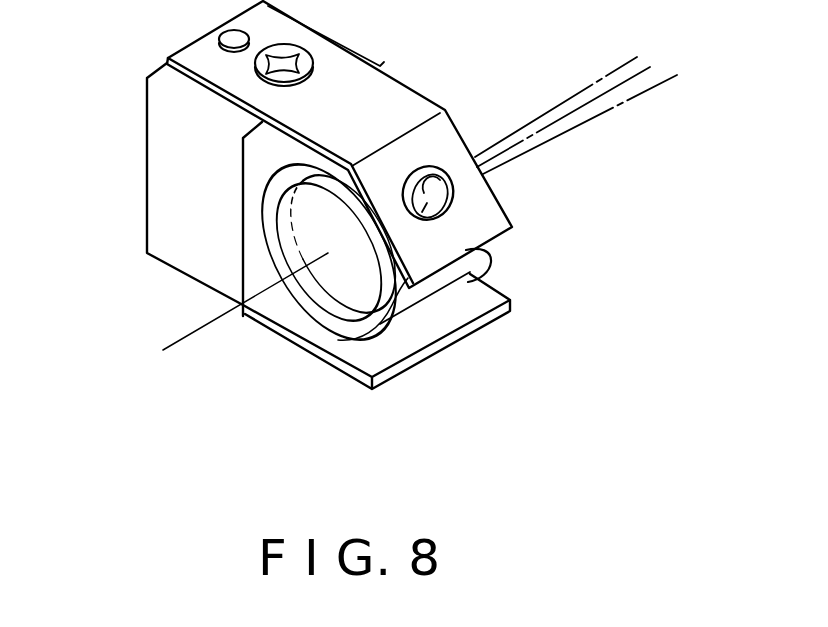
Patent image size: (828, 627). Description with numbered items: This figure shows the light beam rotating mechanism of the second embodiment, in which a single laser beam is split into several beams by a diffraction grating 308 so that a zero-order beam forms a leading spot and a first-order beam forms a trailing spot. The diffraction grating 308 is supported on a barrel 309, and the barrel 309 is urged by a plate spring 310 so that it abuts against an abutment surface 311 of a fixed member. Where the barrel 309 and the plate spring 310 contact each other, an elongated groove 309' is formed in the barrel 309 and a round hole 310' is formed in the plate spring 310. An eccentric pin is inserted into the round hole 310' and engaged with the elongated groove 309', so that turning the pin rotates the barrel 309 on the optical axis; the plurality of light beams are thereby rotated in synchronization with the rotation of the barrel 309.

The diffraction grating 308 is at (347, 287).
The barrel 309 is at (459, 294).
The elongated groove 309' is at (496, 194).
The plate spring 310 is at (339, 144).
The round hole 310' is at (464, 154).
The abutment surface 311 is at (160, 187).